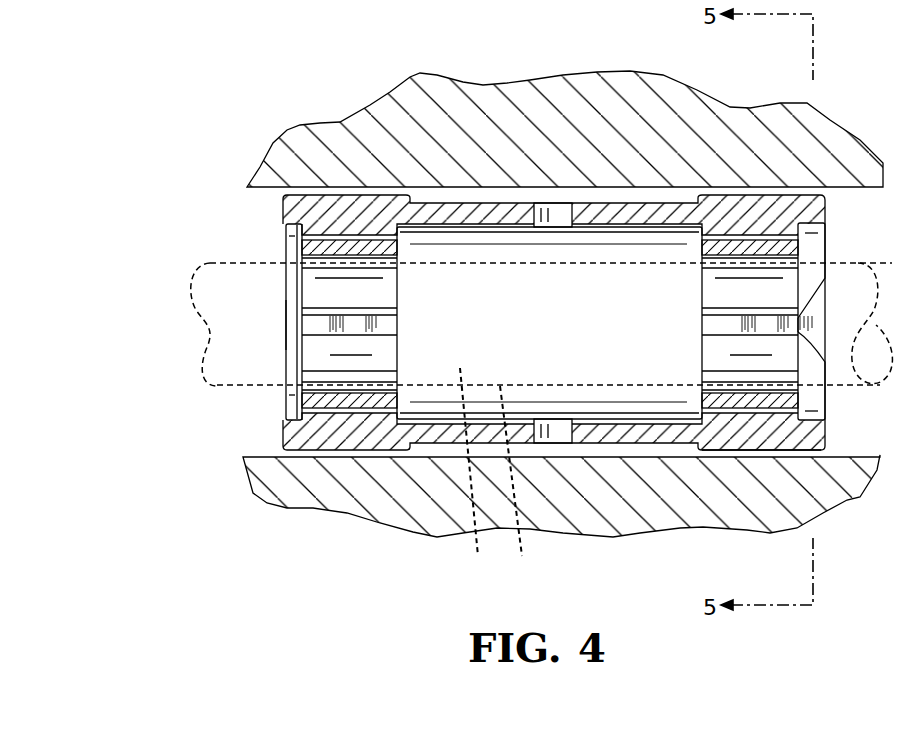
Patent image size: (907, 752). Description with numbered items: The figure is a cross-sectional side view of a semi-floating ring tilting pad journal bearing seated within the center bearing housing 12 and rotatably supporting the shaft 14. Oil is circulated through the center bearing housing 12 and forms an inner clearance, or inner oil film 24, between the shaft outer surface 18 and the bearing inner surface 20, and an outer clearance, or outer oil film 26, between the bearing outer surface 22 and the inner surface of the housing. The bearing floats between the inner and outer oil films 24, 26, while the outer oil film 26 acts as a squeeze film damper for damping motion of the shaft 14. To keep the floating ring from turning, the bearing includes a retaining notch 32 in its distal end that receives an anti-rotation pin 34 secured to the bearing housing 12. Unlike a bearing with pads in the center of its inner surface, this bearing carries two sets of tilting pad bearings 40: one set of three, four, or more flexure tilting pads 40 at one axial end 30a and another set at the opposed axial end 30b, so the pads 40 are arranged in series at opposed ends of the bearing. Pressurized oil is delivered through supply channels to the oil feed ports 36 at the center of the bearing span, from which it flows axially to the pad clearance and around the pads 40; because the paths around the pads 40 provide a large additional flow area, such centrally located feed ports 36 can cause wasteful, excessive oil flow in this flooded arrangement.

The center bearing housing 12 is at (735, 120).
The shaft 14 is at (477, 475).
The shaft outer surface 18 is at (517, 484).
The bearing inner surface 20 is at (336, 256).
The bearing outer surface 22 is at (333, 451).
The inner oil film 24 is at (697, 385).
The outer oil film 26 is at (727, 453).
The axial end of the bearing 30a is at (287, 195).
The opposed axial end of the bearing 30b is at (823, 198).
The retaining notch 32 is at (818, 347).
The anti-rotation pin 34 is at (290, 365).
The oil feed ports 36 is at (556, 212).
The tilting pad bearings 40 is at (302, 250).